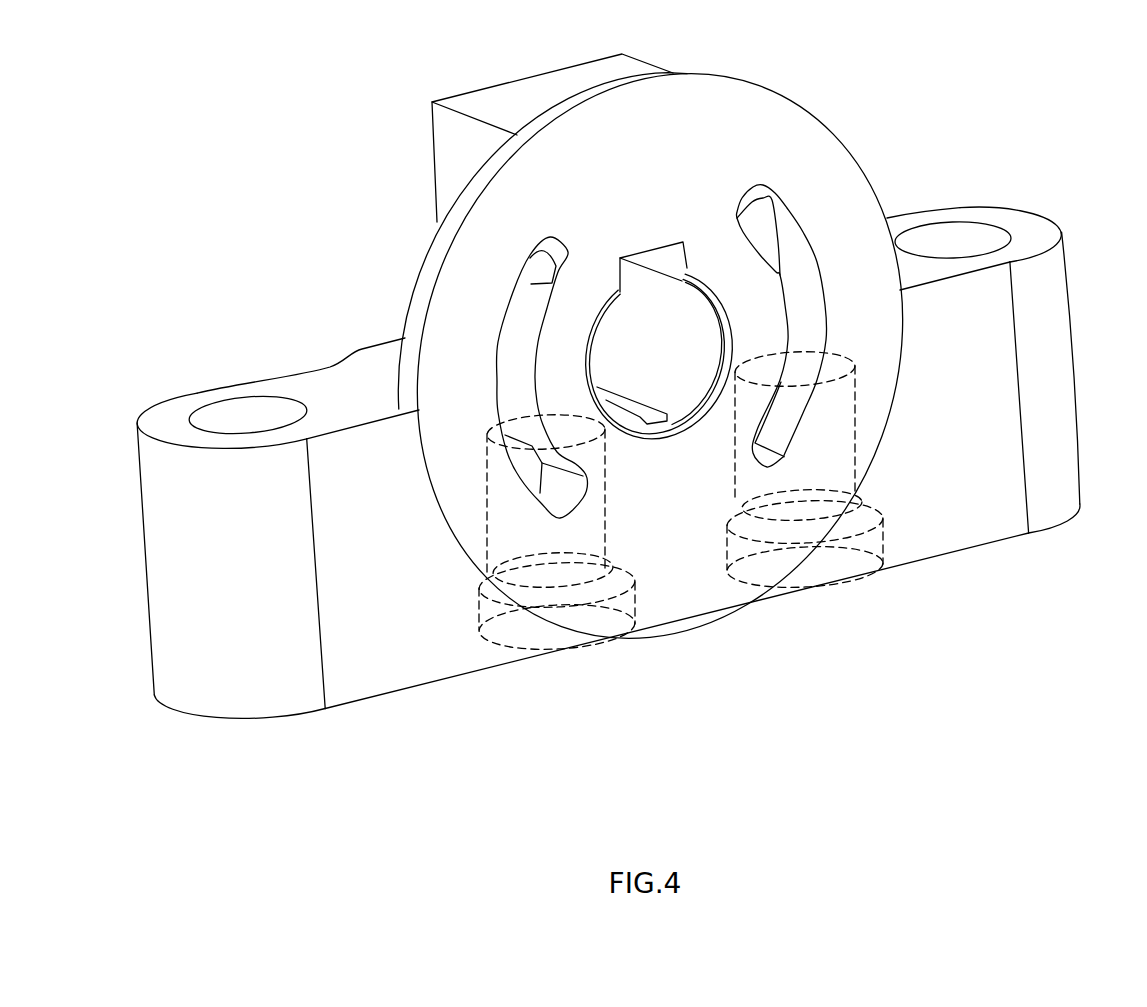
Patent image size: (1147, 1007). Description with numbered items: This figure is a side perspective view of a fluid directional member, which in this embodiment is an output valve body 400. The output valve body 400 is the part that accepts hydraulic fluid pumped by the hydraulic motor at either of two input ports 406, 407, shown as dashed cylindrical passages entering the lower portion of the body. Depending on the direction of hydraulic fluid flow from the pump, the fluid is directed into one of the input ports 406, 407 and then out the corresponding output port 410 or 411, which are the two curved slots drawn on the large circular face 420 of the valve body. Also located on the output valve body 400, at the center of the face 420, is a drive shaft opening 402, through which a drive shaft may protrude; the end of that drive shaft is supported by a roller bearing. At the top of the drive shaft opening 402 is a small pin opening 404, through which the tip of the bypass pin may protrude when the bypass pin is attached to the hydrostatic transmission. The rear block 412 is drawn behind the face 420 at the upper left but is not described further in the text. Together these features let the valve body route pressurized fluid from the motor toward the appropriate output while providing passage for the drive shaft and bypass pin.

The output valve body 400 is at (1055, 353).
The drive shaft opening 402 is at (684, 354).
The pin opening 404 is at (665, 258).
The input port 406 is at (522, 620).
The input port 407 is at (828, 550).
The output port 410 is at (523, 308).
The output port 411 is at (805, 275).
The rear block 412 is at (690, 69).
The face 420 is at (828, 142).